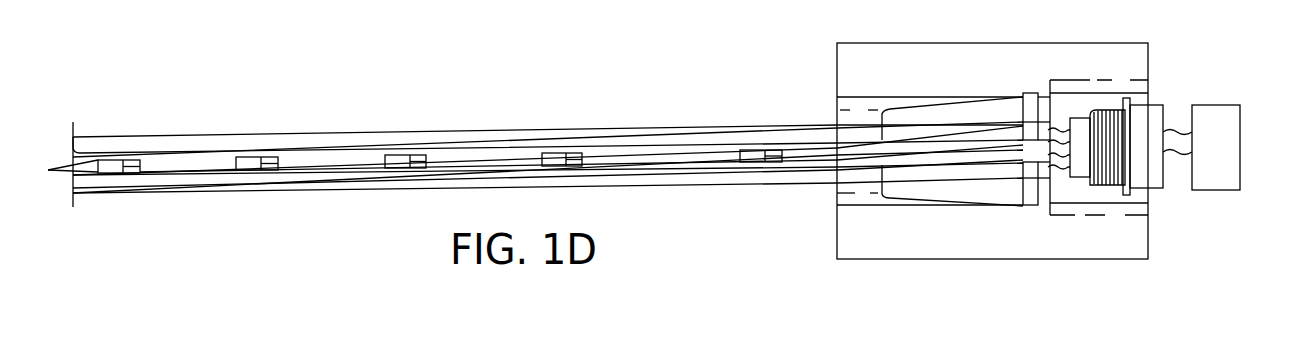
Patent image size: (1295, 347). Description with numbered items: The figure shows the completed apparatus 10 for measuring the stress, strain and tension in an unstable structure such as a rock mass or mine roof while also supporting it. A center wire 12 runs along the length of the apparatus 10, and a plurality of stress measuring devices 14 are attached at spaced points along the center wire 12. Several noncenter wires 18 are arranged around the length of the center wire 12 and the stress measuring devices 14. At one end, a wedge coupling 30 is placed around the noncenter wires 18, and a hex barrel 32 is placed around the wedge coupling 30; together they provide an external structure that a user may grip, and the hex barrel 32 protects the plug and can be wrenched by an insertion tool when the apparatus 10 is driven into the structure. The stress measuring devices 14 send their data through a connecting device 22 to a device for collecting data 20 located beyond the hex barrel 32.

The apparatus 10 is at (560, 118).
The center wire 12 is at (512, 160).
The stress measuring devices 14 is at (758, 150).
The noncenter wires 18 is at (362, 133).
The device for collecting data 20 is at (1213, 180).
The connecting device 22 is at (1140, 115).
The wedge coupling 30 is at (970, 190).
The hex barrel 32 is at (833, 193).